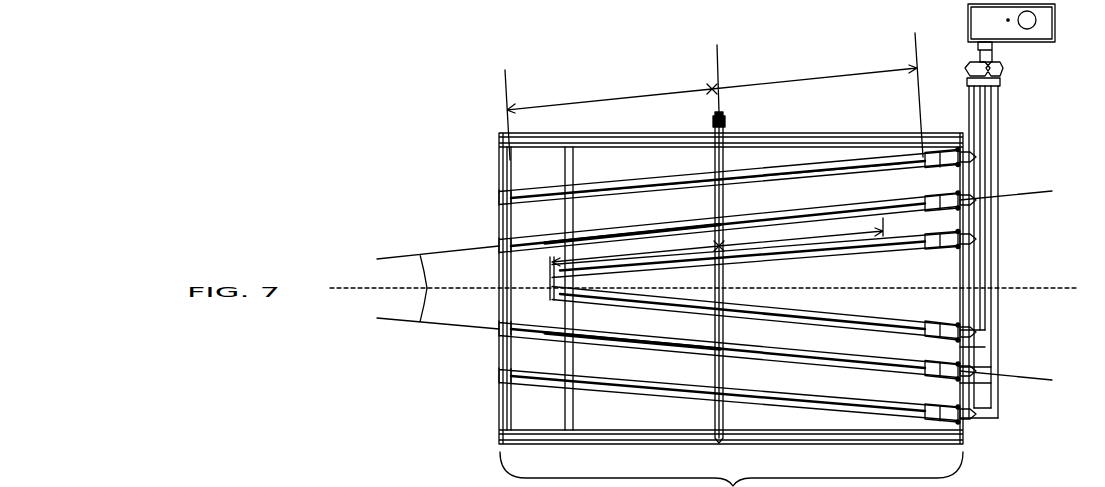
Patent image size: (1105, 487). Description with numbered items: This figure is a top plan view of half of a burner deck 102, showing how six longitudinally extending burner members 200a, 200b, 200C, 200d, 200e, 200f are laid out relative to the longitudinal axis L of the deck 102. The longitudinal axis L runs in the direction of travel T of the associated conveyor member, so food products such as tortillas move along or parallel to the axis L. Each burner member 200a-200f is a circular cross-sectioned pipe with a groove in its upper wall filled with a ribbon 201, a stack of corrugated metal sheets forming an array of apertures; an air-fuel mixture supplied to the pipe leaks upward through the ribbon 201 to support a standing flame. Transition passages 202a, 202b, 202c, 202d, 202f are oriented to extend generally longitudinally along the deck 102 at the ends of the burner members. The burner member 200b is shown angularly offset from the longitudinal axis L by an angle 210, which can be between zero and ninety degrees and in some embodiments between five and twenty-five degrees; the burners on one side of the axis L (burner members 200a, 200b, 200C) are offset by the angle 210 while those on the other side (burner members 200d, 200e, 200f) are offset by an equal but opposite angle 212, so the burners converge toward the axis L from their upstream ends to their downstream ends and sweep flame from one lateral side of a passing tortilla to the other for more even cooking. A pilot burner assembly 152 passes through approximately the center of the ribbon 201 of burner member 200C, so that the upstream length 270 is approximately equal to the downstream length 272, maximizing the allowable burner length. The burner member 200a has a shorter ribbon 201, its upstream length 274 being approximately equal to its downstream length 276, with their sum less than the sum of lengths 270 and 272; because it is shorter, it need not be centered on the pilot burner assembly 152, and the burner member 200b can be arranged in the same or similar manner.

The burner deck 102 is at (450, 70).
The pilot burner assembly 152 is at (739, 123).
The burner member 200C is at (487, 206).
The burner member 200b is at (648, 228).
The burner member 200a is at (862, 266).
The burner member 200f is at (640, 306).
The burner member 200e is at (645, 348).
The burner member 200d is at (647, 394).
The ribbon 201 is at (647, 185).
The transition passage 202c is at (948, 168).
The transition passage 202b is at (950, 204).
The transition passage 202a is at (950, 243).
The transition passage 202f is at (950, 328).
The transition passage 202d is at (948, 418).
The angle 210 is at (441, 271).
The angle 212 is at (441, 304).
The length 270 is at (817, 95).
The length 272 is at (611, 115).
The upstream length 274 is at (801, 232).
The downstream length 276 is at (638, 253).
The direction of travel T is at (648, 26).
The longitudinal axis L is at (1055, 281).